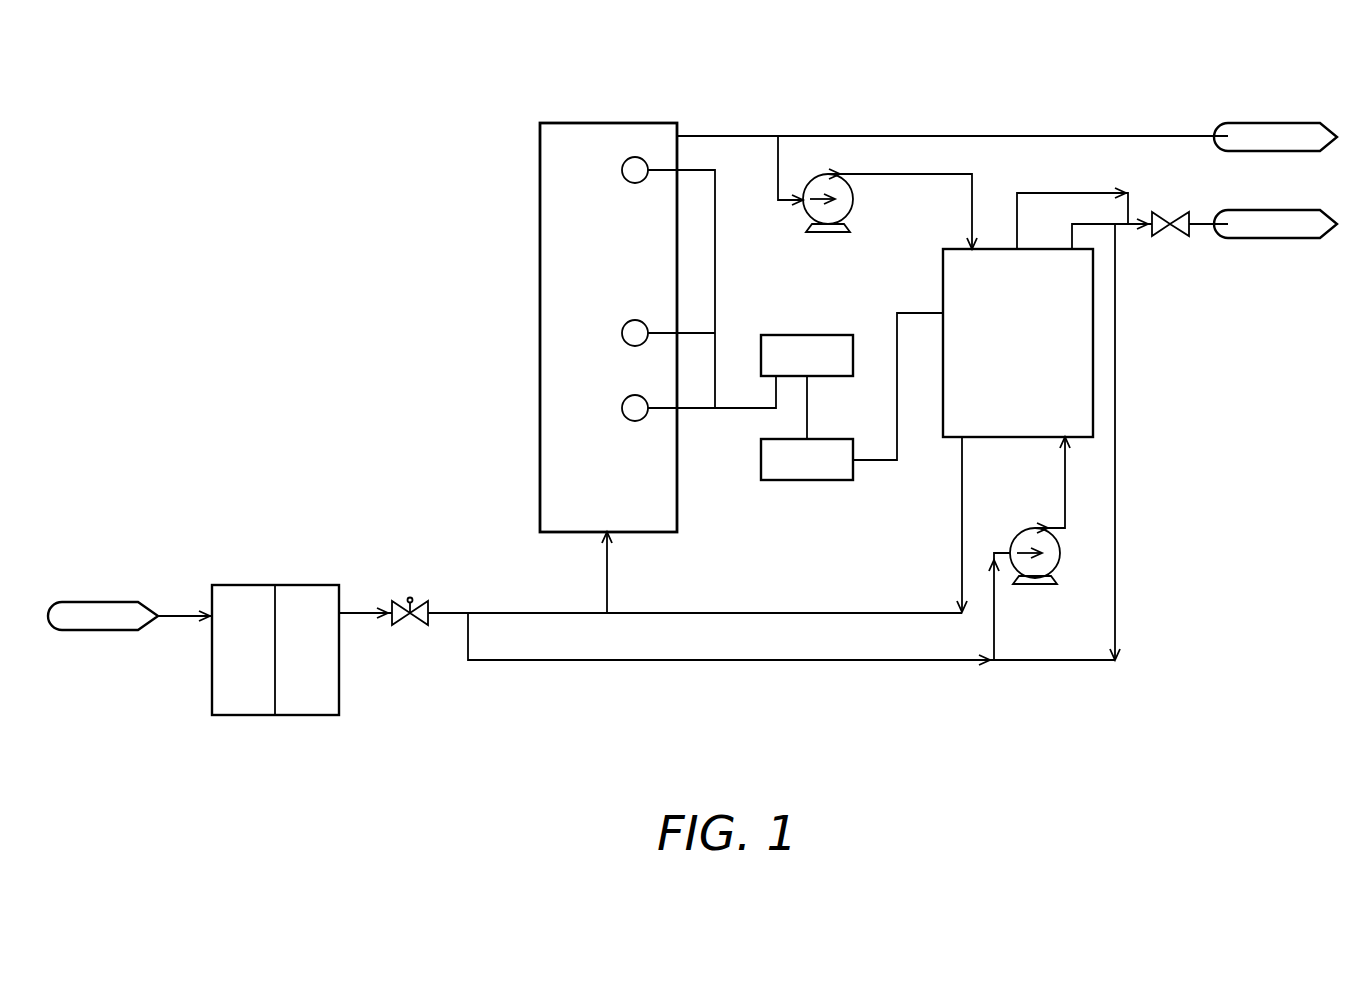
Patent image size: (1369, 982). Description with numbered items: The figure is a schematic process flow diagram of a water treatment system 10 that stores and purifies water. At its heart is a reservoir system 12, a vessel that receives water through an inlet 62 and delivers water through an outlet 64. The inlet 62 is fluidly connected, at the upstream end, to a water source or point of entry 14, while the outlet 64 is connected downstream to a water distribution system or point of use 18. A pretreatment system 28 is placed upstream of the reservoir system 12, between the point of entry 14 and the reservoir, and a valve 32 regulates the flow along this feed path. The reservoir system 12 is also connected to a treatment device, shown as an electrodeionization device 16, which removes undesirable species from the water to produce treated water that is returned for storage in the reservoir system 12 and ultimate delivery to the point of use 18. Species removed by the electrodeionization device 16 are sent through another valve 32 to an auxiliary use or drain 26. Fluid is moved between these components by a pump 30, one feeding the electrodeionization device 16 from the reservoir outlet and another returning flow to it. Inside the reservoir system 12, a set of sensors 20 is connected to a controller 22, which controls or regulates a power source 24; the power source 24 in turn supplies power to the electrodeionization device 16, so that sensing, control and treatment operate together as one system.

The water treatment system 10 is at (368, 122).
The reservoir system 12 is at (540, 245).
The point of entry 14 is at (72, 602).
The electrodeionization device 16 is at (943, 440).
The point of use 18 is at (1245, 123).
The sensor 20 is at (630, 183).
The controller 22 is at (823, 335).
The power source 24 is at (797, 480).
The drain 26 is at (1285, 238).
The pretreatment system 28 is at (339, 672).
The pump 30 is at (853, 205).
The valve 32 is at (425, 605).
The inlet 62 is at (607, 525).
The outlet 64 is at (680, 134).